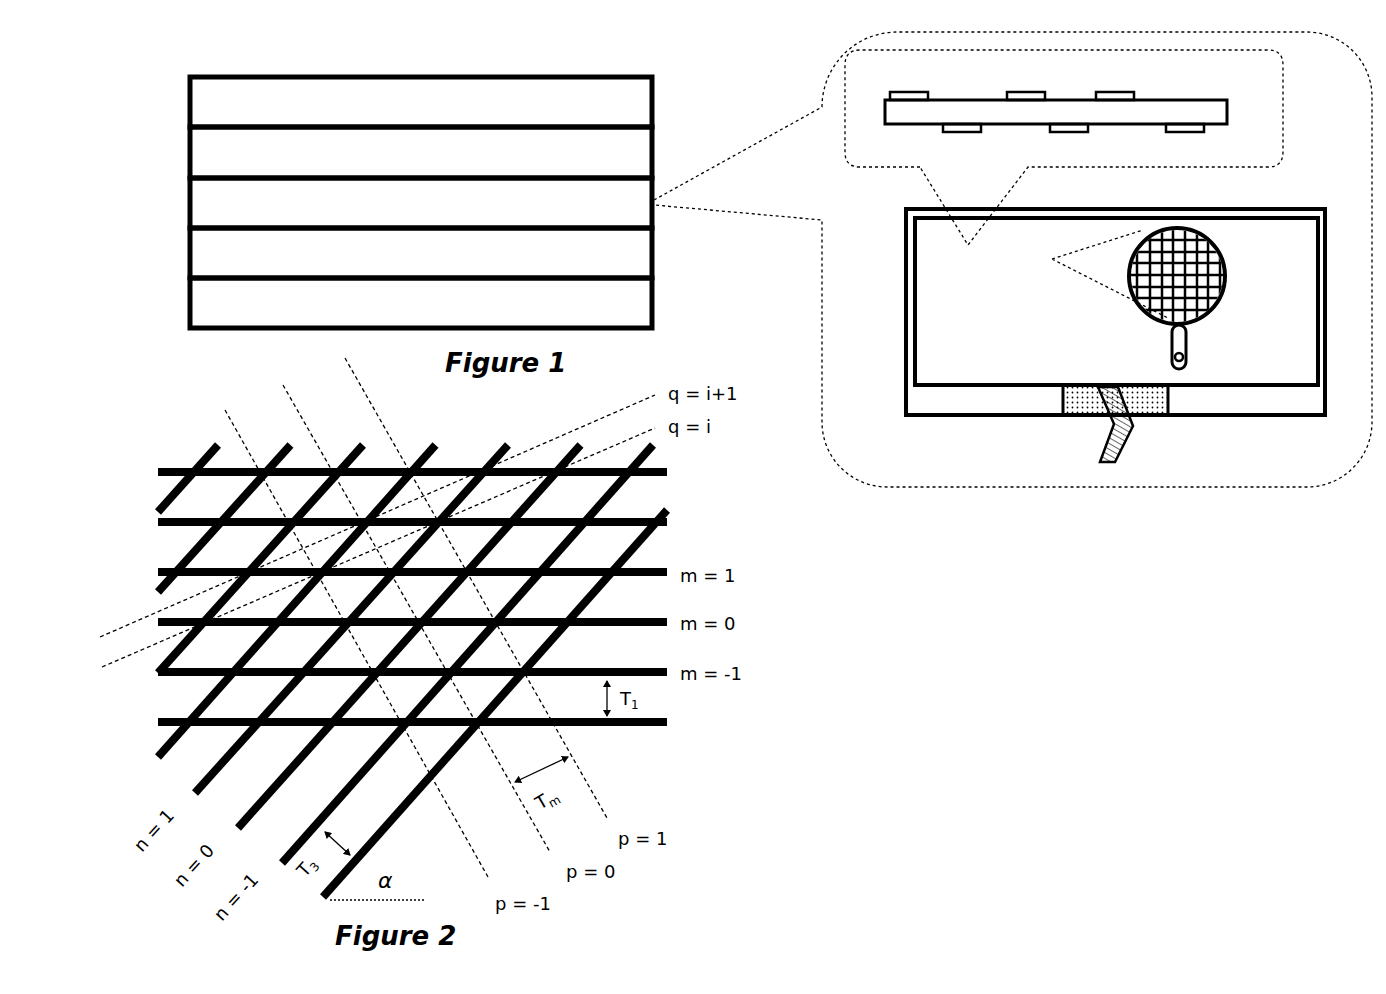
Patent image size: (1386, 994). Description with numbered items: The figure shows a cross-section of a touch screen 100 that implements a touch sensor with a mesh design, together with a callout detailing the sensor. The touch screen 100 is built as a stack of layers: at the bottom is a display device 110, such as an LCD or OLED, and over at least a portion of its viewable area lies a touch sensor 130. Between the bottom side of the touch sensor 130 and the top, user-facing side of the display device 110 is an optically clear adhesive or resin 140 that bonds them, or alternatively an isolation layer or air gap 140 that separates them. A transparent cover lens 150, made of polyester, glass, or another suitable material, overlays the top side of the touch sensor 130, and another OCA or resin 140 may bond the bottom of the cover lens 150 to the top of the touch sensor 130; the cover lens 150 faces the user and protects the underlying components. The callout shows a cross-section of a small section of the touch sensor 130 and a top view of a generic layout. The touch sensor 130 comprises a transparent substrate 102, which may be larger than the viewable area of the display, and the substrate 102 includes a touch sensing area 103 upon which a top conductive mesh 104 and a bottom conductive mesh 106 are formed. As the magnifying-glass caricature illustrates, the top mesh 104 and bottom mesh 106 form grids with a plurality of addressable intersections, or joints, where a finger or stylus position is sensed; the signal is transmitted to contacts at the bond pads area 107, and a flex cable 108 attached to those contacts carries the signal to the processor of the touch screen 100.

The touch screen 100 is at (671, 74).
The transparent substrate 102 is at (1181, 100).
The touch sensing area 103 is at (1116, 301).
The top conductive mesh 104 is at (1122, 92).
The bottom conductive mesh 106 is at (1178, 132).
The bond pads area 107 is at (1078, 418).
The flex cable 108 is at (1100, 462).
The display device 110 is at (188, 302).
The touch sensor 130 is at (188, 202).
The optically clear adhesive or resin 140 is at (188, 152).
The transparent cover lens 150 is at (188, 102).